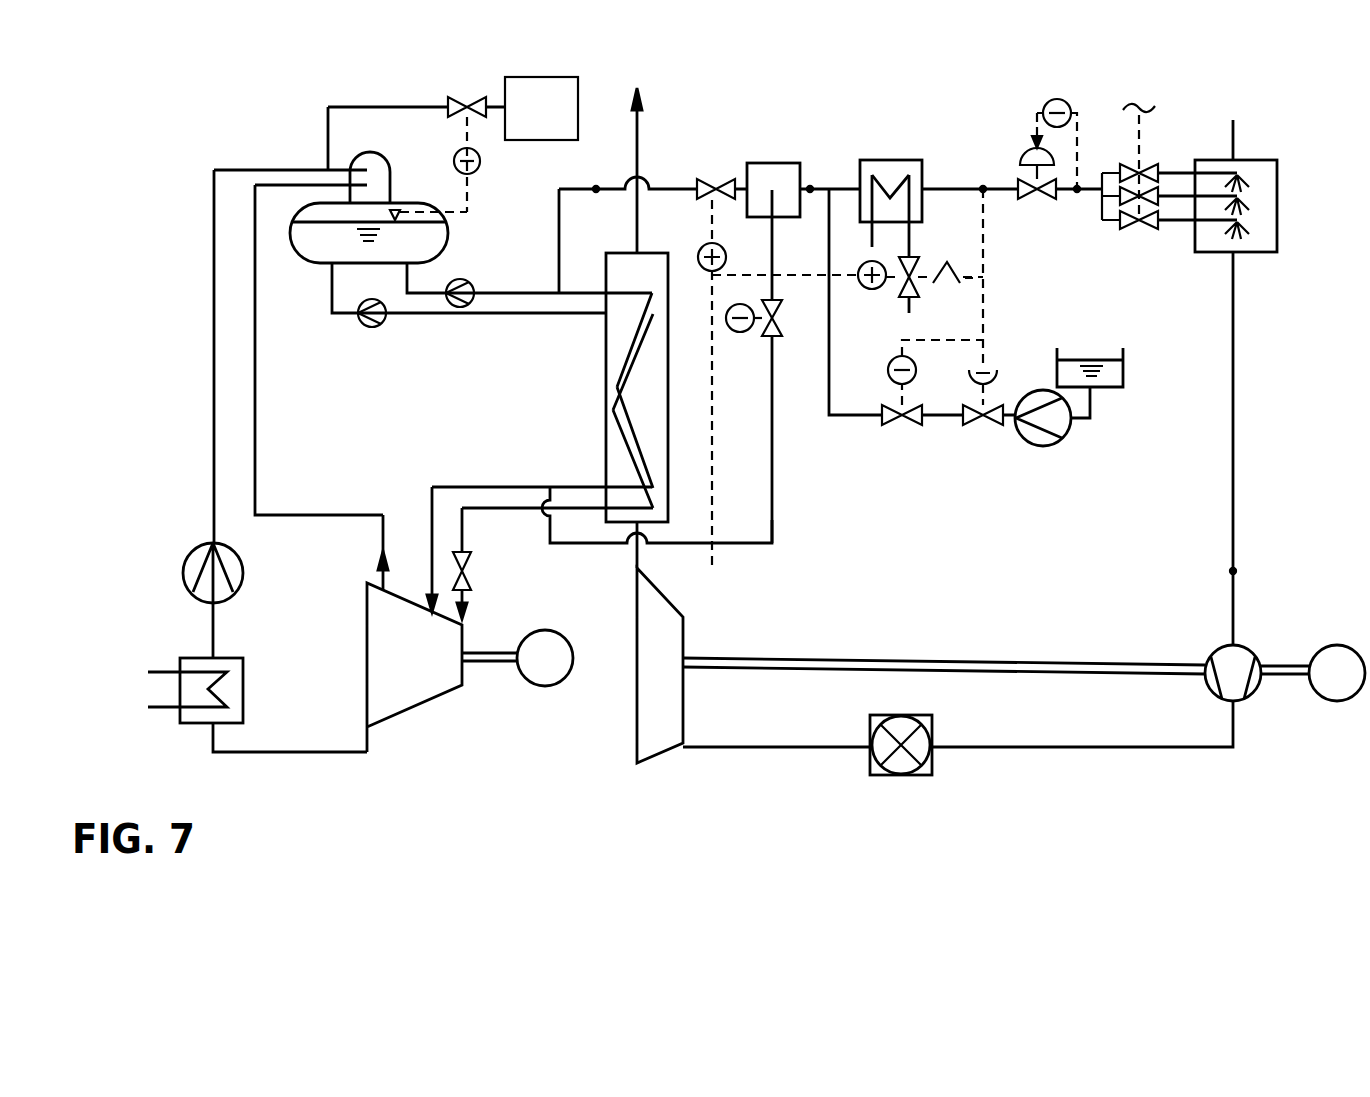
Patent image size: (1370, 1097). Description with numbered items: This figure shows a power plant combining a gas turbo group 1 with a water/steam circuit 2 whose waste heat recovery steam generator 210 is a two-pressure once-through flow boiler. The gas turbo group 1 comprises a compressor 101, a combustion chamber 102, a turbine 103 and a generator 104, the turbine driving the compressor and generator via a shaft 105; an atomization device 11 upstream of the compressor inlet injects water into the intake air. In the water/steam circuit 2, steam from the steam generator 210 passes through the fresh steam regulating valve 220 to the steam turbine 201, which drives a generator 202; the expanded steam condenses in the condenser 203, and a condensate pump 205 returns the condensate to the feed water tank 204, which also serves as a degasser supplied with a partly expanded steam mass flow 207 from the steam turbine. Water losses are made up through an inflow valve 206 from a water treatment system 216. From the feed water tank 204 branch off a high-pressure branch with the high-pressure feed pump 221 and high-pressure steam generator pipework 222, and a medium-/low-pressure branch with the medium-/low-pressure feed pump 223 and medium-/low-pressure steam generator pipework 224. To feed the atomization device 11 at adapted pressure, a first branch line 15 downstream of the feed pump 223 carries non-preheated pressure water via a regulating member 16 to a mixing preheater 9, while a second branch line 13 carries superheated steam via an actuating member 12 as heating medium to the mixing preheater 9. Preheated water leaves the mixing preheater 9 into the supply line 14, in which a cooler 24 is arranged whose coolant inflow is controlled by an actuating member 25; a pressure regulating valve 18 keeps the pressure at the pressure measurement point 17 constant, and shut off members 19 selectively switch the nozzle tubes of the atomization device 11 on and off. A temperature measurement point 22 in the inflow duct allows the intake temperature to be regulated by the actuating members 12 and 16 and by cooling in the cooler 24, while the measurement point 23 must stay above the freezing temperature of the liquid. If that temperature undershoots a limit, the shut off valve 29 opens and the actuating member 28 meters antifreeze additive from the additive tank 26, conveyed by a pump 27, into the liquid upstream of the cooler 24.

The gas turbo group 1 is at (895, 621).
The water/steam circuit 2 is at (429, 427).
The mixing preheater 9 is at (758, 163).
The atomization device 11 is at (1275, 240).
The actuating member 12 is at (783, 335).
The second branch line 13 is at (772, 530).
The supply line 14 is at (810, 187).
The first branch line 15 is at (597, 186).
The regulating member 16 is at (703, 180).
The pressure measurement point 17 is at (1077, 197).
The pressure regulating valve 18 is at (1022, 203).
The shut off members 19 is at (1152, 225).
The temperature measurement point 22 is at (1233, 571).
The measurement point 23 is at (984, 188).
The cooler 24 is at (876, 160).
The actuating member 25 is at (917, 298).
The additive tank 26 is at (1108, 387).
The pump 27 is at (1030, 442).
The actuating member 28 is at (884, 423).
The shut off valve 29 is at (967, 423).
The compressor 101 is at (1247, 700).
The combustion chamber 102 is at (930, 753).
The turbine 103 is at (658, 735).
The generator 104 is at (1335, 703).
The shaft 105 is at (948, 662).
The steam turbine 201 is at (445, 687).
The generator 202 is at (552, 683).
The condenser 203 is at (190, 722).
The feed water tank 204 is at (298, 255).
The condensate pump 205 is at (183, 567).
The inflow valve 206 is at (466, 103).
The partly expanded steam mass flow 207 is at (253, 445).
The waste heat recovery steam generator 210 is at (606, 413).
The water treatment system 216 is at (570, 131).
The fresh steam regulating valve 220 is at (463, 563).
The high-pressure feed pump 221 is at (375, 327).
The high-pressure steam generator pipework 222 is at (633, 467).
The medium-/low-pressure feed pump 223 is at (457, 307).
The medium-/low-pressure steam generator pipework 224 is at (628, 352).